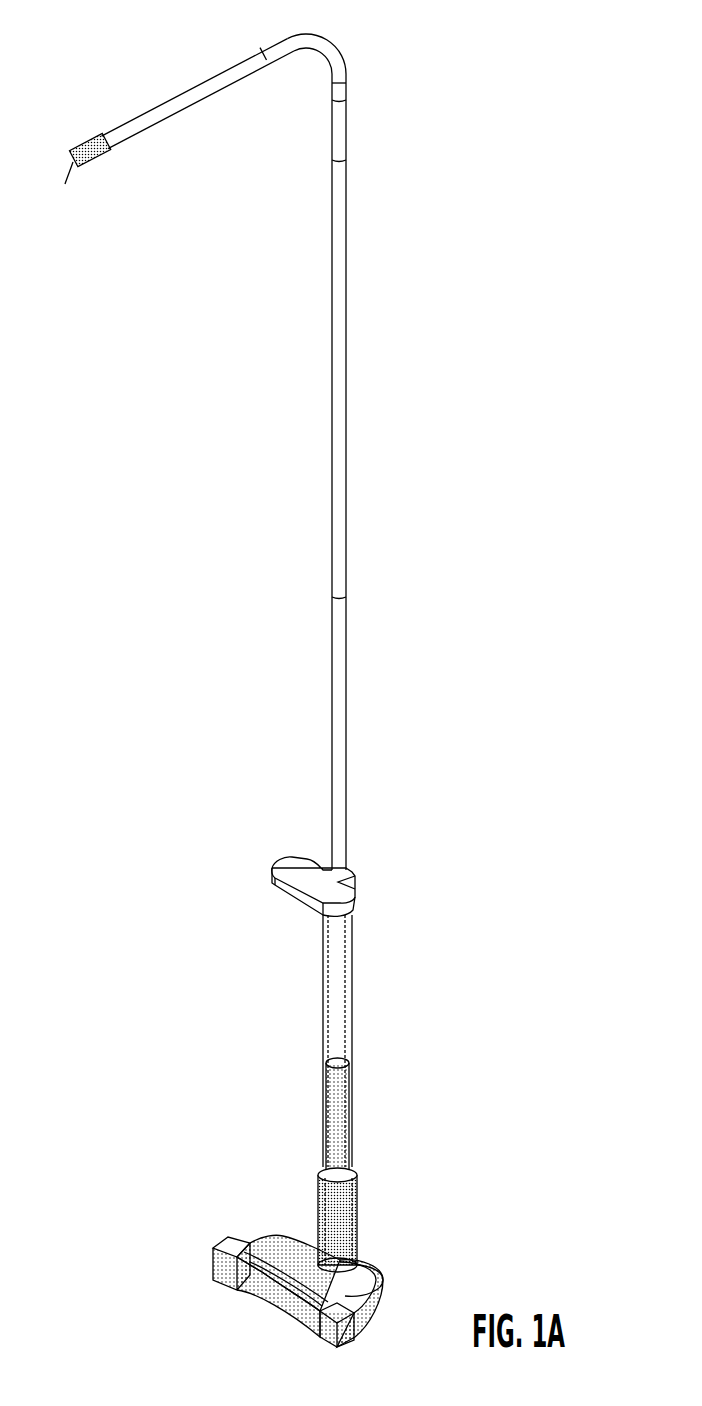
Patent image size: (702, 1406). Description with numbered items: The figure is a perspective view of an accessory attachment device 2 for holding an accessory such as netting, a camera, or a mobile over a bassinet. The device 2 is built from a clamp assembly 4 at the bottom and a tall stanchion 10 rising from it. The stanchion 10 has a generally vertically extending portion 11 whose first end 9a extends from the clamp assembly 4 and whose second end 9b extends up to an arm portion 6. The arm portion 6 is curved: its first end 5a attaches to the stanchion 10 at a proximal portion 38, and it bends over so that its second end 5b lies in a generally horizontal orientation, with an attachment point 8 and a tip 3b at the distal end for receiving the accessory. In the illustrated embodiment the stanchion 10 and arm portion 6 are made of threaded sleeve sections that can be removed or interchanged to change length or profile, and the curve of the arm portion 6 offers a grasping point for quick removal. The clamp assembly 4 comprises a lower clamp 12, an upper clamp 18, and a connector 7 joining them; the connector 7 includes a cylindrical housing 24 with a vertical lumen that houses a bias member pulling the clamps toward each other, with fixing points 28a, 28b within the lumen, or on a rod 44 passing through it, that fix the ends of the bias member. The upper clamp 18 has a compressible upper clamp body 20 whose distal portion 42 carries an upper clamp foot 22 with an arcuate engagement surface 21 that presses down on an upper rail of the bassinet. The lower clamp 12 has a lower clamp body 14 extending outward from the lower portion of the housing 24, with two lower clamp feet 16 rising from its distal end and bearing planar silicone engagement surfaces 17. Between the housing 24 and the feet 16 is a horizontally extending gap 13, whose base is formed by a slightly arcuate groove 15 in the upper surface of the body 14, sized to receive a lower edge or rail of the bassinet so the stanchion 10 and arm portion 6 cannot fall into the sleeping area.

The accessory attachment device 2 is at (488, 125).
The distal tip 3b is at (102, 134).
The clamp assembly 4 is at (247, 1040).
The first end of the arm portion 5a is at (378, 123).
The second end of the arm portion 5b is at (125, 113).
The arm portion 6 is at (322, 36).
The connector 7 is at (323, 1048).
The attachment point 8 is at (68, 180).
The first end of the stanchion 9a is at (388, 765).
The second end of the stanchion 9b is at (365, 233).
The stanchion 10 is at (347, 428).
The vertically extending portion 11 is at (307, 547).
The lower clamp 12 is at (294, 1263).
The gap 13 is at (381, 1278).
The lower clamp body 14 is at (386, 1280).
The groove 15 is at (273, 1242).
The lower clamp feet 16 is at (215, 1260).
The engagement surfaces 17 is at (230, 1237).
The upper clamp 18 is at (355, 868).
The upper clamp body 20 is at (317, 883).
The engagement surface 21 is at (327, 920).
The upper clamp foot 22 is at (280, 897).
The housing 24 is at (341, 1037).
The fixing point 28a is at (357, 1190).
The fixing point 28b is at (350, 1050).
The proximal portion 38 is at (332, 153).
The distal portion of the upper clamp body 42 is at (280, 870).
The rod 44 is at (353, 1100).